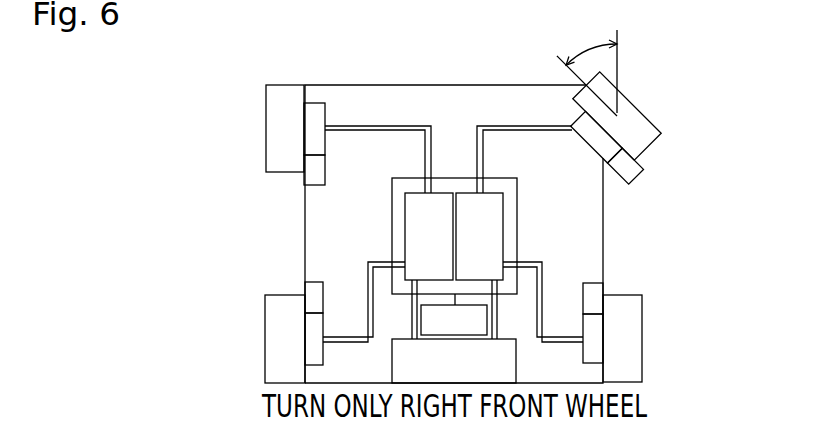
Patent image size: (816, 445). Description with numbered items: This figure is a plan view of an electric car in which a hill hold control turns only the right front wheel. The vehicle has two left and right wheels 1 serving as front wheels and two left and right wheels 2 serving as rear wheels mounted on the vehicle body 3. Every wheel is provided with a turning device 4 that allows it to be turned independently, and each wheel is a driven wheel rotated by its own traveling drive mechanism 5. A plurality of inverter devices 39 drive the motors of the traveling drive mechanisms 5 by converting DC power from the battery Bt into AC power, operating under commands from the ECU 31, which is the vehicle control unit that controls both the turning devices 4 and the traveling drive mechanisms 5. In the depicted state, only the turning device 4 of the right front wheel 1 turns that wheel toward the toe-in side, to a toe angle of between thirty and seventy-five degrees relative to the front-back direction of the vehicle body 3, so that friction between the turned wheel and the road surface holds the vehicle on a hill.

The wheel (front wheel) 1 is at (278, 147).
The wheel (rear wheel) 2 is at (278, 320).
The vehicle body 3 is at (359, 186).
The turning device 4 is at (312, 177).
The traveling drive mechanism 5 is at (318, 110).
The inverter device 39 is at (517, 208).
The ECU (vehicle control unit) 31 is at (487, 318).
The battery Bt is at (392, 357).